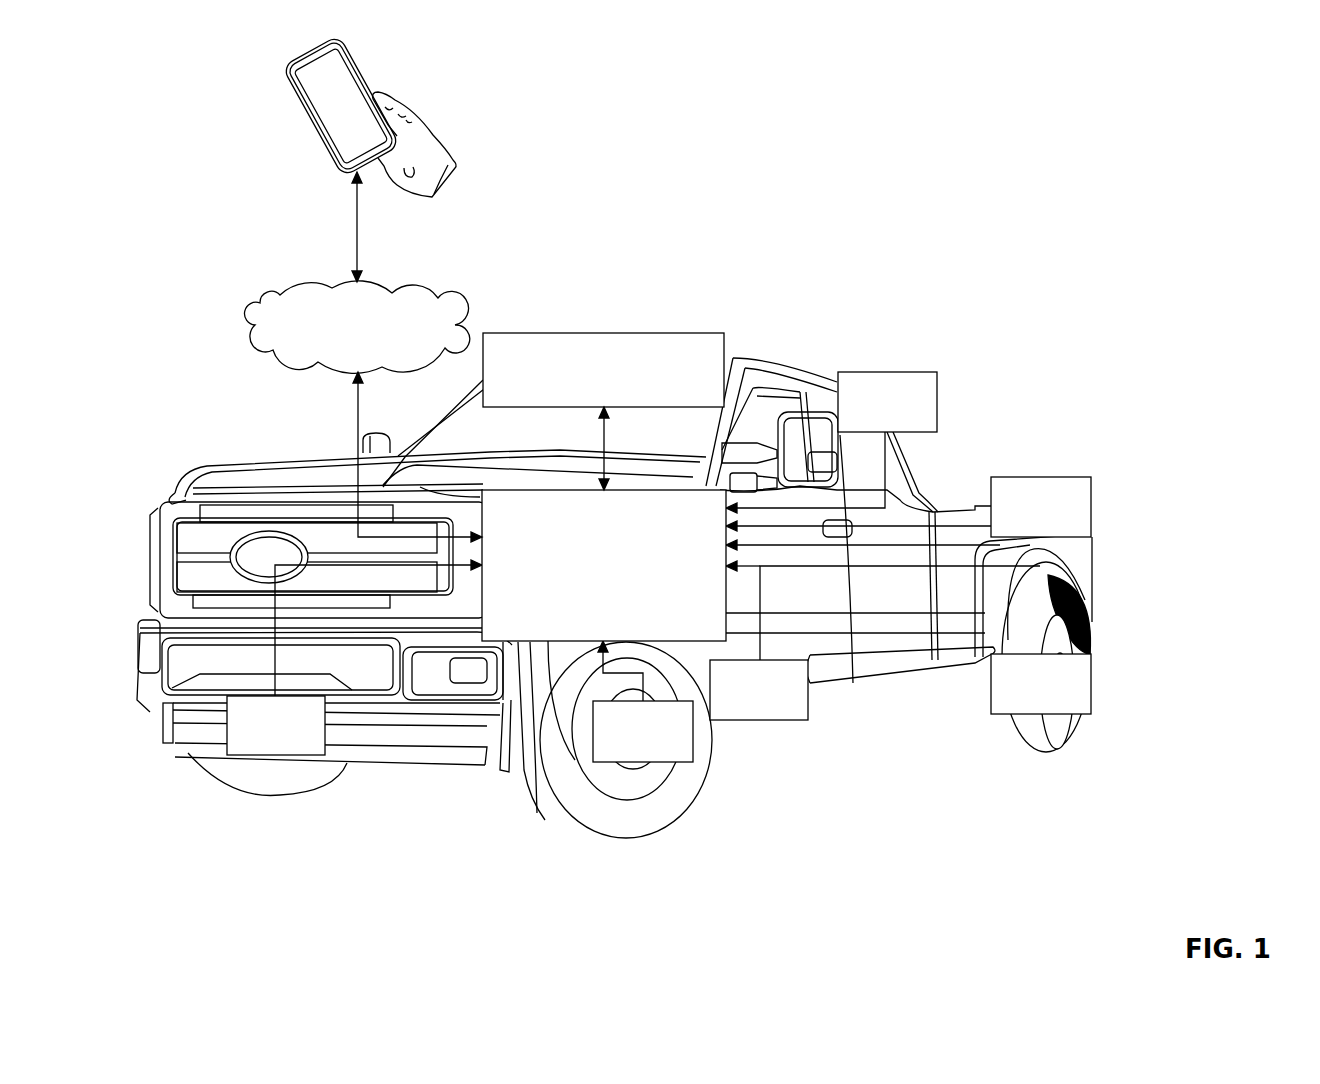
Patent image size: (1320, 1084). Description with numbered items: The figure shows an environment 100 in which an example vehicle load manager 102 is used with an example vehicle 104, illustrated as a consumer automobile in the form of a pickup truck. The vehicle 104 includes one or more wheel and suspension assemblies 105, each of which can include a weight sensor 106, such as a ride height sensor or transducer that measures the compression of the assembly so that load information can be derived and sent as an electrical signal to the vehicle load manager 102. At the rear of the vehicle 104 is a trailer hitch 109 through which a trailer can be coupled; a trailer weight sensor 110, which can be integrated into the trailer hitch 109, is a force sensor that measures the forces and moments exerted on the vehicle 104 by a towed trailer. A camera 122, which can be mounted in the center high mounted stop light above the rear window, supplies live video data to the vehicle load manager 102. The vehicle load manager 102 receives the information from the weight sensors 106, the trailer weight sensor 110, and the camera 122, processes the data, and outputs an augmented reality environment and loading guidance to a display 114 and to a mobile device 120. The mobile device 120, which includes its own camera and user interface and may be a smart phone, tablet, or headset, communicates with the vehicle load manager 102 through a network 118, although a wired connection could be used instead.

The environment 100 is at (1060, 169).
The vehicle load manager 102 is at (583, 607).
The vehicle 104 is at (632, 618).
The wheel and suspension assemblies 105 is at (277, 797).
The weight sensors 106 is at (255, 737).
The trailer hitch 109 is at (929, 485).
The trailer weight sensor 110 is at (1020, 518).
The display 114 is at (583, 396).
The network 118 is at (457, 300).
The mobile device 120 is at (357, 73).
The camera 122 is at (866, 413).